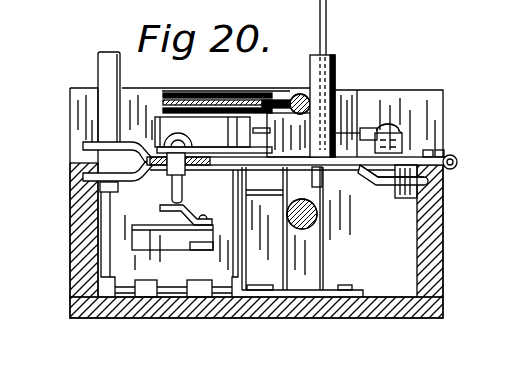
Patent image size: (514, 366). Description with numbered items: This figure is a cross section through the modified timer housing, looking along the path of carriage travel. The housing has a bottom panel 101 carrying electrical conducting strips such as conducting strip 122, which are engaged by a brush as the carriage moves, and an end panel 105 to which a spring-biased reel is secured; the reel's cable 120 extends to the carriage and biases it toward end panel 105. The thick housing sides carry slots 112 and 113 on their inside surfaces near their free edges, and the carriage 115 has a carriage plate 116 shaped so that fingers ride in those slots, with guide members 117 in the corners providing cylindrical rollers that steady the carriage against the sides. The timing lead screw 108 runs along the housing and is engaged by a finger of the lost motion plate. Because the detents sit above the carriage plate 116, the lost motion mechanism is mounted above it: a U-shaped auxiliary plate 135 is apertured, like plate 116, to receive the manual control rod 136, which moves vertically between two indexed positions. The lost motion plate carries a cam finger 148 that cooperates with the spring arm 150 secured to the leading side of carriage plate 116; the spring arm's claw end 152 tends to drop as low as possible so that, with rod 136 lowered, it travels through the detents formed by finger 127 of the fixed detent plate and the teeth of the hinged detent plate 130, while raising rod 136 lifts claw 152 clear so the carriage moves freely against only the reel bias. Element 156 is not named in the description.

The bottom panel 101 is at (172, 310).
The end panel 105 is at (423, 90).
The timing lead screw 108 is at (289, 215).
The slot 112 is at (72, 181).
The slot 113 is at (428, 183).
The carriage 115 is at (340, 180).
The carriage plate 116 is at (380, 188).
The guide member 117 is at (100, 208).
The cable 120 is at (281, 100).
The conducting strip 122 is at (228, 310).
The finger 127 is at (408, 143).
The detent plate 130 is at (460, 156).
The U-shaped auxiliary plate 135 is at (337, 77).
The manual control rod 136 is at (323, 32).
The cam finger 148 is at (375, 127).
The spring arm 150 is at (404, 130).
The claw end 152 is at (340, 93).
The support column 156 is at (297, 181).